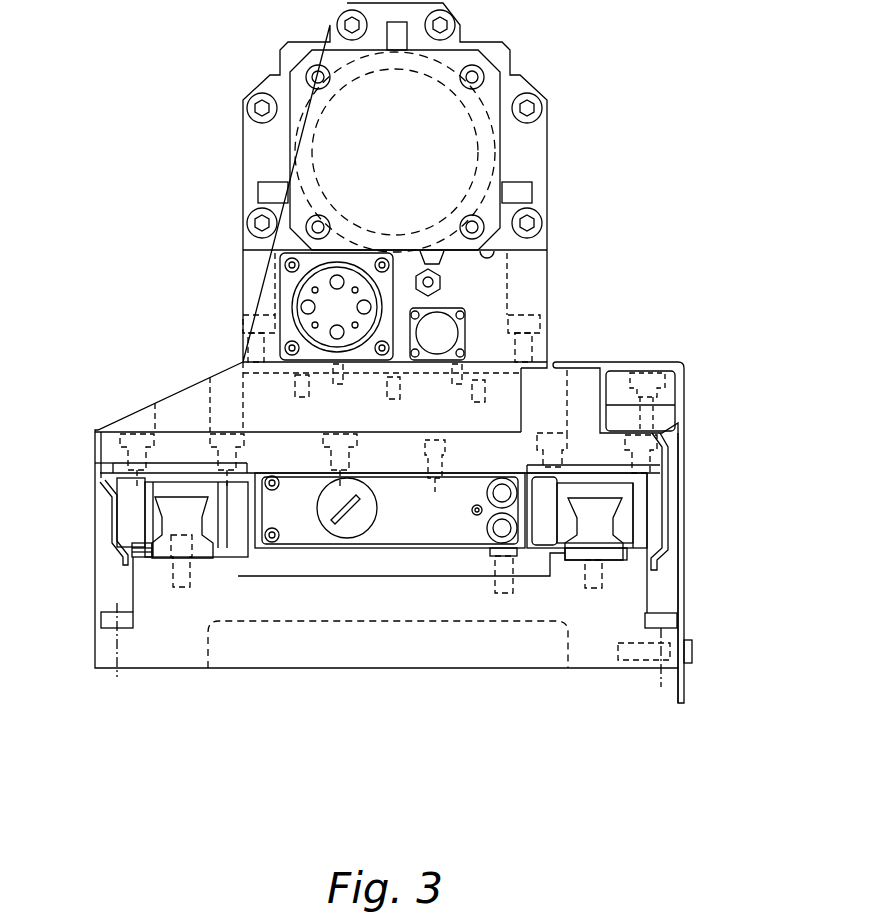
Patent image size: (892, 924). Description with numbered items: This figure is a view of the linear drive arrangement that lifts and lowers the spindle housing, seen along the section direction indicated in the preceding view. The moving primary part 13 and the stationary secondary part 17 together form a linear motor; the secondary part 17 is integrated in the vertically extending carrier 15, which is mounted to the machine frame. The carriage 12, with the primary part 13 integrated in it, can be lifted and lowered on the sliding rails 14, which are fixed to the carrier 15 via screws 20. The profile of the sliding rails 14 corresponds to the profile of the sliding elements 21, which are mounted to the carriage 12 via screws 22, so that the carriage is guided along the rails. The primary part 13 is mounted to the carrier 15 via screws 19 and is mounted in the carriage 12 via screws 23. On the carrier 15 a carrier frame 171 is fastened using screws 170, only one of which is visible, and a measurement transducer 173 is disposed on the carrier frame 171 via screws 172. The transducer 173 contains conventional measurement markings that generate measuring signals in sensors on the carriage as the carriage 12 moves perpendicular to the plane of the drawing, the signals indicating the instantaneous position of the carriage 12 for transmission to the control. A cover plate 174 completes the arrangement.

The carriage 12 is at (187, 397).
The primary part 13 is at (320, 567).
The sliding rails 14 is at (160, 533).
The carrier 15 is at (628, 603).
The secondary part 17 is at (452, 530).
The screws 19 is at (515, 583).
The screws 20 is at (188, 565).
The sliding elements 21 is at (650, 513).
The screws 22 is at (690, 462).
The screws 23 is at (432, 462).
The screws 170 is at (692, 653).
The carrier frame 171 is at (672, 572).
The screws 172 is at (665, 397).
The measurement transducer 173 is at (620, 380).
The cover plate 174 is at (580, 363).